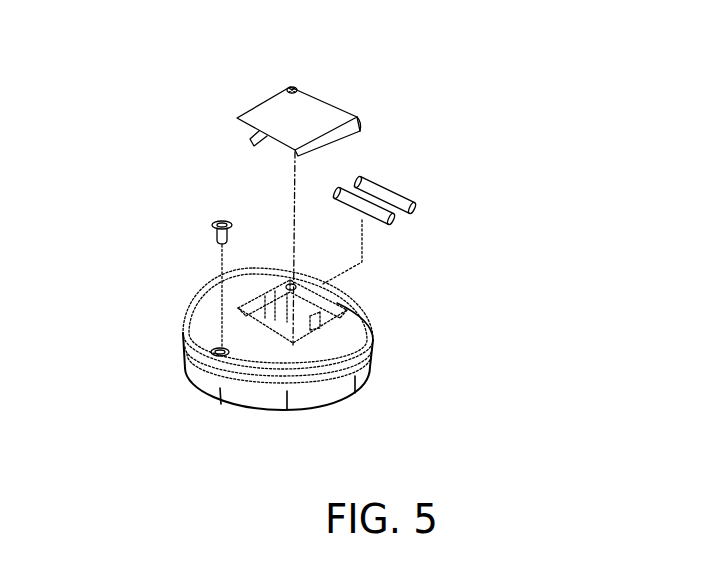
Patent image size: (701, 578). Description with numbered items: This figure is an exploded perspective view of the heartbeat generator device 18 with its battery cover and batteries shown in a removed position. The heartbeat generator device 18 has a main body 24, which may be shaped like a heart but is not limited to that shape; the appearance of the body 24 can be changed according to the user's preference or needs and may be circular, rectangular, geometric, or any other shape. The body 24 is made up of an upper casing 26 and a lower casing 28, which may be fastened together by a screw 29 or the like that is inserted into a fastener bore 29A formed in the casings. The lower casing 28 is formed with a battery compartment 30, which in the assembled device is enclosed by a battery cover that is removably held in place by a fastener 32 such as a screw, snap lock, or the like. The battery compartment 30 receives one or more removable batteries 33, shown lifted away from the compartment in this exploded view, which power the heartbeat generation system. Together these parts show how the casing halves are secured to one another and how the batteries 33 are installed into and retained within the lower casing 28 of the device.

The heartbeat generator device 18 is at (464, 119).
The main body 24 is at (108, 131).
The upper casing 26 is at (362, 383).
The lower casing 28 is at (347, 333).
The screw 29 is at (220, 220).
The fastener bore 29A is at (202, 293).
The battery compartment 30 is at (300, 322).
The fastener 32 is at (318, 115).
The removable batteries 33 is at (385, 192).